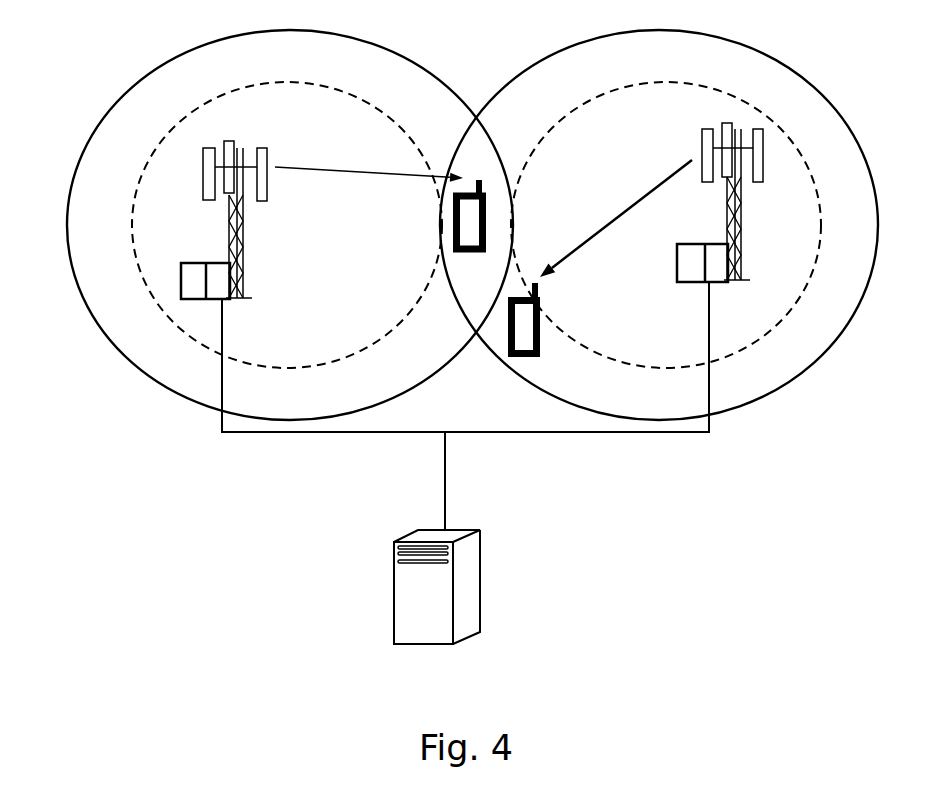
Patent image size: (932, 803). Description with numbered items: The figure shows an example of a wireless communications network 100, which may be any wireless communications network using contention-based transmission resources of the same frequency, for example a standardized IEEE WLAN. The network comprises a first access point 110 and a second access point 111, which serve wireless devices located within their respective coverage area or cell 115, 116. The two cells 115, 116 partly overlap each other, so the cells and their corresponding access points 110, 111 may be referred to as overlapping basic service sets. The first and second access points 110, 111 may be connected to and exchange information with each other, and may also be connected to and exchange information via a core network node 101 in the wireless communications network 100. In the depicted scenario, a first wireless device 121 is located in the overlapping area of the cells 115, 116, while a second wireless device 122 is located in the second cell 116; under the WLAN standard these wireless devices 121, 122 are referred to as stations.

The wireless communications network 100 is at (767, 463).
The core network node 101 is at (480, 620).
The first access point 110 is at (262, 152).
The second access point 111 is at (740, 225).
The first cell 115 is at (92, 313).
The second cell 116 is at (850, 315).
The first wireless device 121 is at (457, 228).
The second wireless device 122 is at (542, 303).